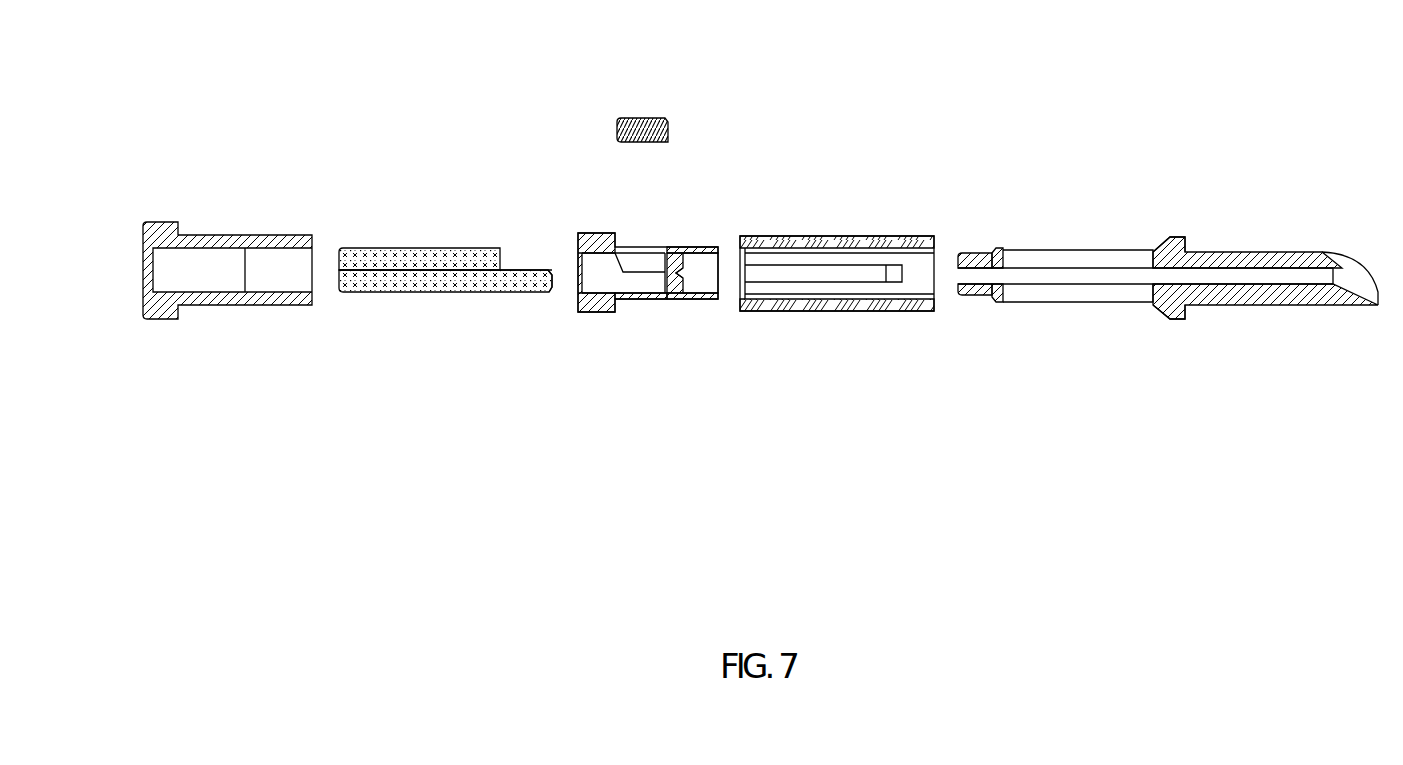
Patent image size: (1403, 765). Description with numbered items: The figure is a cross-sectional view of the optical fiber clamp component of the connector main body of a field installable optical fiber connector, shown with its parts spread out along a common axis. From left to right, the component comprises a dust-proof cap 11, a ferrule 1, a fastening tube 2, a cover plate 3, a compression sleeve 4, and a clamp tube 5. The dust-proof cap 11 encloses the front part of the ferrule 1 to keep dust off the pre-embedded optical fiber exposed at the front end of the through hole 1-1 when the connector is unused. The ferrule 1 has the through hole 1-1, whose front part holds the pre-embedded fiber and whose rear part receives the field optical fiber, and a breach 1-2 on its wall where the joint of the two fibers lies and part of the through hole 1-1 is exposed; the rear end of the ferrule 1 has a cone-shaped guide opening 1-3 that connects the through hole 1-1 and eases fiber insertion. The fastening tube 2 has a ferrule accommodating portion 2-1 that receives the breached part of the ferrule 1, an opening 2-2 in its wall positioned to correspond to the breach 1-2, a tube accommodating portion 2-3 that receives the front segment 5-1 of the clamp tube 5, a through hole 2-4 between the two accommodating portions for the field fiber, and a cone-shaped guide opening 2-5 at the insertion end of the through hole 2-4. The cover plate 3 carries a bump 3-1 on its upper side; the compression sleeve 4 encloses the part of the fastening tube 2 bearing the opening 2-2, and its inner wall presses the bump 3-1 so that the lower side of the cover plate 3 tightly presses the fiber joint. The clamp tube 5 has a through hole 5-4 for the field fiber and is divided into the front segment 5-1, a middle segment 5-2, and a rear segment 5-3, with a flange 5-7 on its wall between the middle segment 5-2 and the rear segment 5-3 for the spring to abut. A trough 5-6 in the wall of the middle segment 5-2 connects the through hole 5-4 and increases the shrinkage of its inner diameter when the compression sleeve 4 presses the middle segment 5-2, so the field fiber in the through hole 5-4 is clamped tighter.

The dust-proof cap 11 is at (210, 305).
The ferrule 1 is at (452, 300).
The through hole 1-1 is at (450, 273).
The breach 1-2 is at (522, 257).
The guide opening 1-3 is at (546, 270).
The fastening tube 2 is at (648, 301).
The ferrule accommodating portion 2-1 is at (591, 276).
The opening 2-2 is at (630, 250).
The tube accommodating portion 2-3 is at (698, 276).
The through hole 2-4 is at (673, 283).
The guide opening 2-5 is at (685, 271).
The cover plate 3 is at (684, 94).
The bump 3-1 is at (636, 118).
The compression sleeve 4 is at (826, 312).
The clamp tube 5 is at (1168, 288).
The front segment 5-1 is at (982, 293).
The middle segment 5-2 is at (1098, 300).
The rear segment 5-3 is at (1282, 297).
The through hole 5-4 is at (1104, 272).
The trough 5-6 is at (1030, 247).
The flange 5-7 is at (1178, 237).